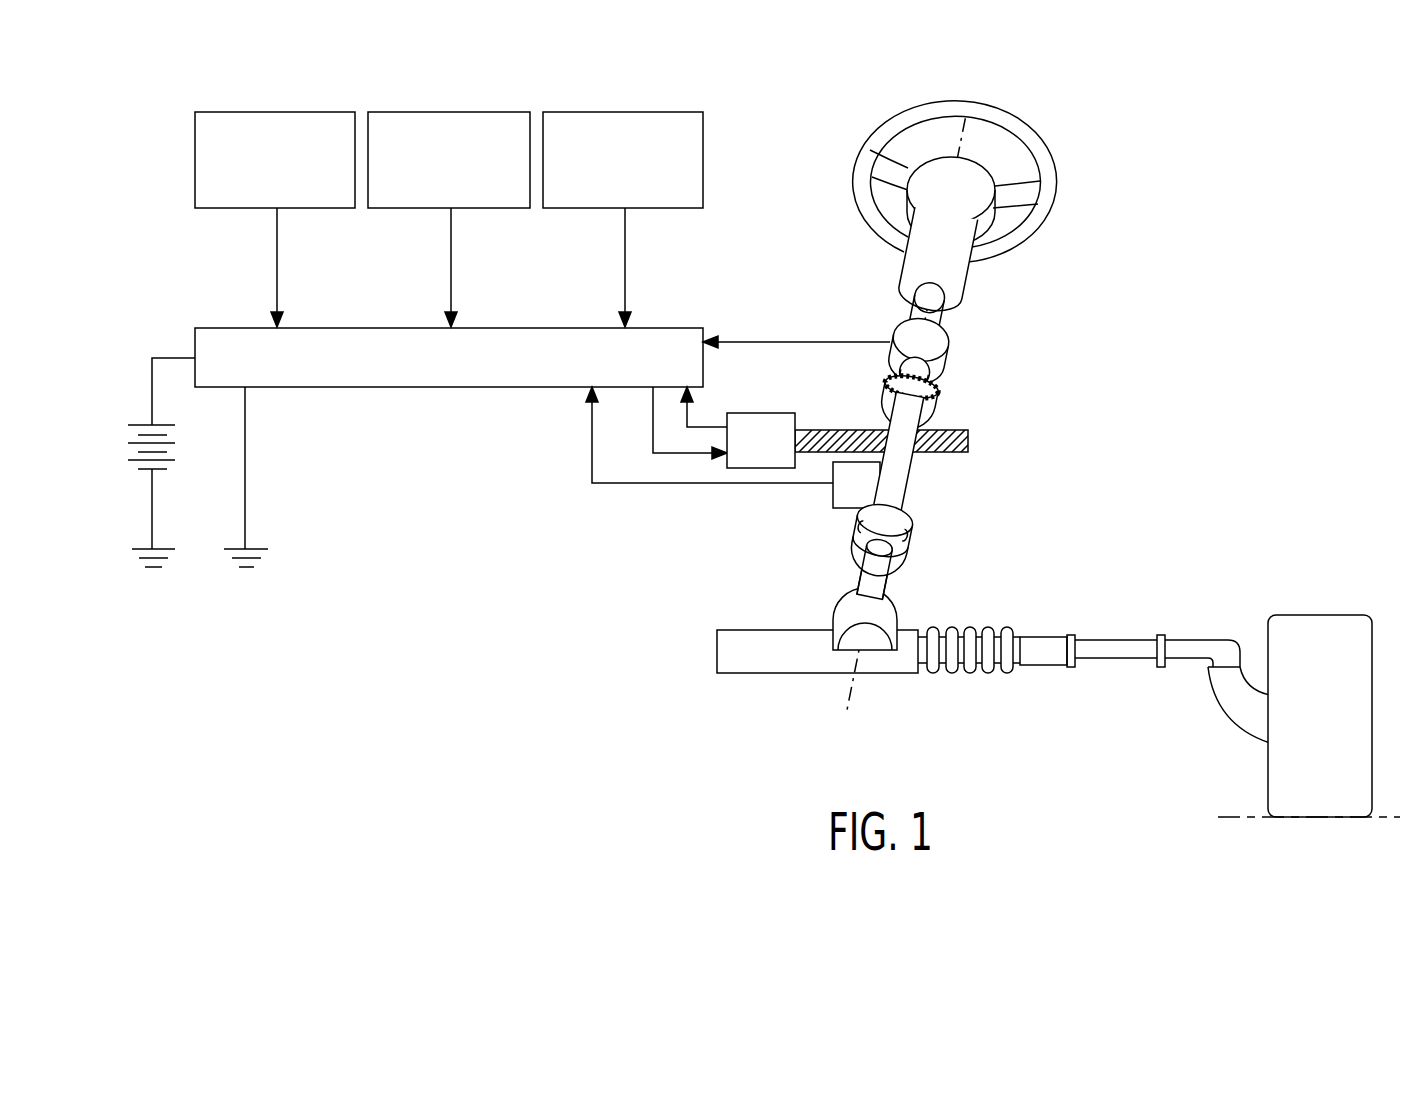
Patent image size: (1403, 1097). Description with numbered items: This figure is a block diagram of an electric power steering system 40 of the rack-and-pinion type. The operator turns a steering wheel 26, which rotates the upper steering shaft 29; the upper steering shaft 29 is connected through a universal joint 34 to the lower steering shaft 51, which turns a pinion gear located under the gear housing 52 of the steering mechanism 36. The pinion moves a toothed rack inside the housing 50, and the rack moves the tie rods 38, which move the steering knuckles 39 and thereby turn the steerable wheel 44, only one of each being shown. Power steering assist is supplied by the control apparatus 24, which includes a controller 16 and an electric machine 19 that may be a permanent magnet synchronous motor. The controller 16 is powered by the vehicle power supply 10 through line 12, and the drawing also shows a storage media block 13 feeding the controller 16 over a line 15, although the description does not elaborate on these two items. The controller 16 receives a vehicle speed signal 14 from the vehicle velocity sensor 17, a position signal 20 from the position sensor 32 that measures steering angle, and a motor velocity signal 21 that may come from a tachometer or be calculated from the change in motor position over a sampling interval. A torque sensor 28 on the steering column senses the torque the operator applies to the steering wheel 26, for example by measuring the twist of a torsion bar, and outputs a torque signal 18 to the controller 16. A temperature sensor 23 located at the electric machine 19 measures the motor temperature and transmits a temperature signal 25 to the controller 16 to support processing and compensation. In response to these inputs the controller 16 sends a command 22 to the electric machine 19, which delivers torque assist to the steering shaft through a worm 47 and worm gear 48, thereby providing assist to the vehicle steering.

The vehicle power supply 10 is at (138, 451).
The line 12 is at (168, 356).
The storage media 13 is at (278, 112).
The vehicle speed signal 14 is at (450, 244).
The storage media signal 15 is at (276, 244).
The controller 16 is at (416, 389).
The vehicle velocity sensor 17 is at (450, 112).
The torque signal 18 is at (808, 338).
The electric machine 19 is at (773, 413).
The position signal 20 is at (722, 487).
The motor velocity signal 21 is at (713, 424).
The command 22 is at (672, 457).
The temperature sensor 23 is at (625, 112).
The control apparatus 24 is at (1143, 332).
The temperature signal 25 is at (624, 244).
The steering wheel 26 is at (1012, 132).
The torque sensor 28 is at (943, 343).
The upper steering shaft 29 is at (920, 312).
The position sensor 32 is at (832, 497).
The universal joint 34 is at (905, 535).
The steering mechanism 36 is at (990, 623).
The tie rods 38 is at (1110, 660).
The steering knuckles 39 is at (1235, 703).
The electric power steering system 40 is at (1226, 433).
The steerable wheel 44 is at (1307, 628).
The worm 47 is at (962, 443).
The worm gear 48 is at (927, 403).
The housing 50 is at (757, 662).
The lower steering shaft 51 is at (882, 588).
The gear housing 52 is at (843, 608).